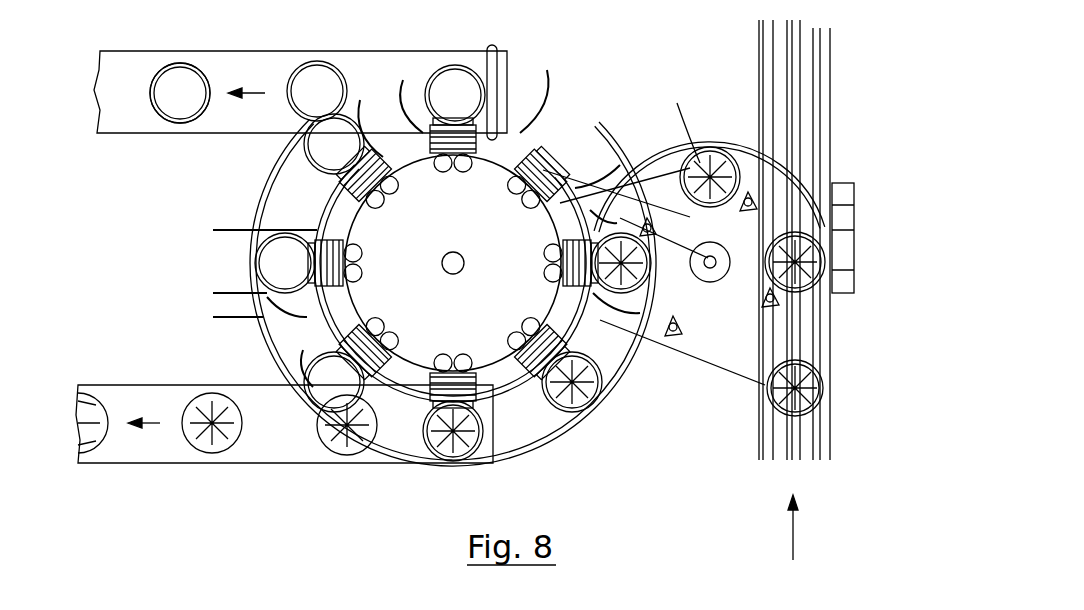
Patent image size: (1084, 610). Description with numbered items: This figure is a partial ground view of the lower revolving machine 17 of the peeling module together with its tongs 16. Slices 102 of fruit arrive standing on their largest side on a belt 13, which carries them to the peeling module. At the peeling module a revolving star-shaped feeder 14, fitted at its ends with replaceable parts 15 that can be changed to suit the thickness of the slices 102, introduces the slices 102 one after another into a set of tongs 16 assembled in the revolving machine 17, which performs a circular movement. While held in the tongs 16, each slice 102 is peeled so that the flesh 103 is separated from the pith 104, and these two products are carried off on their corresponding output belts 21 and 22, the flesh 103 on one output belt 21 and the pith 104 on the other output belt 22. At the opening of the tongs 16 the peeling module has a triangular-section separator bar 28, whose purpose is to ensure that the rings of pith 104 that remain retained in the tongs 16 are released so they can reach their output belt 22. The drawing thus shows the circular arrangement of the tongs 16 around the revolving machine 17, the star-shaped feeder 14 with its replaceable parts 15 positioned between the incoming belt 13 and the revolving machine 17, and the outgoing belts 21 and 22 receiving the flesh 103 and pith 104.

The belt 13 is at (782, 448).
The revolving star-shaped feeder 14 is at (718, 300).
The replaceable parts 15 is at (752, 150).
The tongs 16 is at (500, 82).
The revolving machine 17 is at (500, 350).
The output belt 21 is at (140, 450).
The output belt 22 is at (138, 115).
The triangular-section separator bar 28 is at (488, 58).
The slices 102 is at (582, 410).
The flesh 103 is at (338, 447).
The pith 104 is at (310, 163).